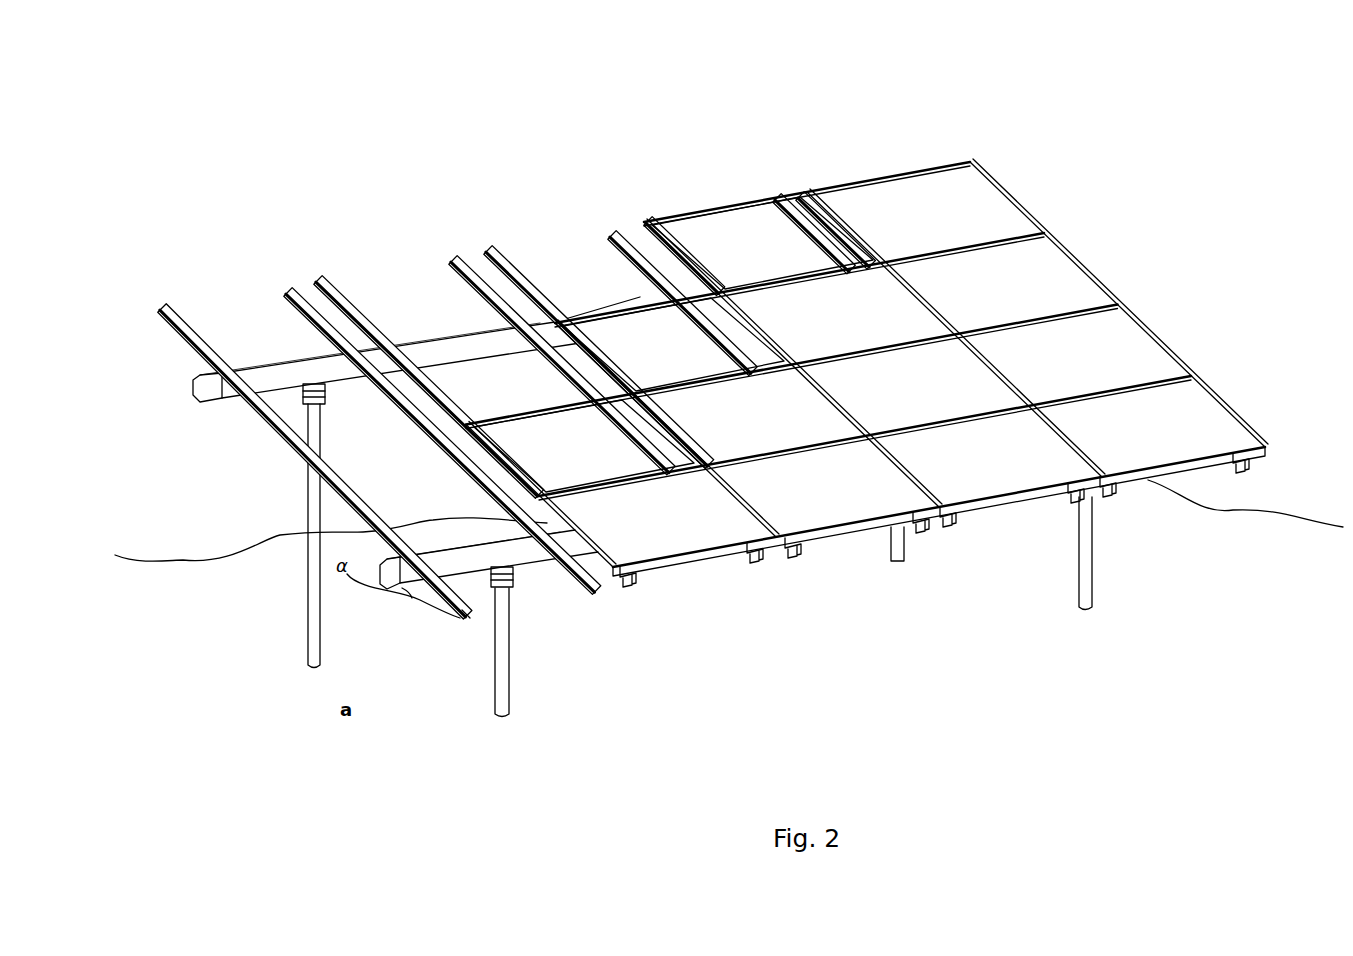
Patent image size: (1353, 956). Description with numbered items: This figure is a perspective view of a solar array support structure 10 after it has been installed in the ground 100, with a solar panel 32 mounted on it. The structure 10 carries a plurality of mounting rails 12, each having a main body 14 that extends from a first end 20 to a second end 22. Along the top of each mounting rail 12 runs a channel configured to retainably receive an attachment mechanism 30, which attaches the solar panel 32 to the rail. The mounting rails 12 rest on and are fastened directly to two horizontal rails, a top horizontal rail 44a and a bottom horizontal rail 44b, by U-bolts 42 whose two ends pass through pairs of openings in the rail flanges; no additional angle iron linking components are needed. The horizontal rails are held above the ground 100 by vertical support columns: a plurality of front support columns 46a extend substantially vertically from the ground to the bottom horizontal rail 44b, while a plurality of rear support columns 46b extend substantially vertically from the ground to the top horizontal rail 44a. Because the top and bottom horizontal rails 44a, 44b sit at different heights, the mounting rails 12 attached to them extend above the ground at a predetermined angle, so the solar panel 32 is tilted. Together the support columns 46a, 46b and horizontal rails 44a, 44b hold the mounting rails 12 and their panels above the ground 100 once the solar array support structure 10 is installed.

The solar array support structure 10 is at (397, 195).
The mounting rail 12 is at (172, 313).
The main body 14 is at (290, 442).
The first end 20 is at (289, 421).
The second end 22 is at (468, 622).
The attachment mechanism 30 is at (707, 523).
The solar panel 32 is at (937, 200).
The U-bolt 42 is at (517, 342).
The top horizontal rail 44a is at (438, 335).
The bottom horizontal rail 44b is at (467, 550).
The front support column 46a is at (506, 688).
The rear support column 46b is at (313, 622).
The ground 100 is at (1277, 540).